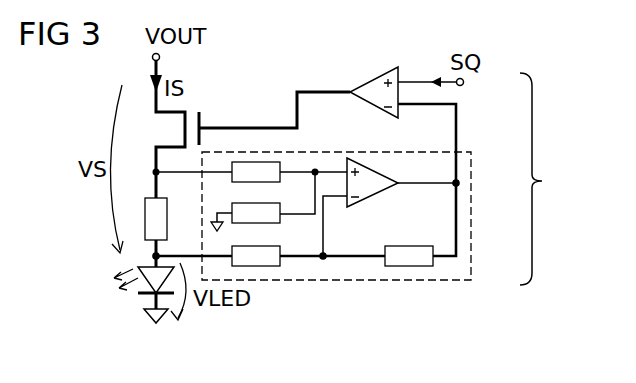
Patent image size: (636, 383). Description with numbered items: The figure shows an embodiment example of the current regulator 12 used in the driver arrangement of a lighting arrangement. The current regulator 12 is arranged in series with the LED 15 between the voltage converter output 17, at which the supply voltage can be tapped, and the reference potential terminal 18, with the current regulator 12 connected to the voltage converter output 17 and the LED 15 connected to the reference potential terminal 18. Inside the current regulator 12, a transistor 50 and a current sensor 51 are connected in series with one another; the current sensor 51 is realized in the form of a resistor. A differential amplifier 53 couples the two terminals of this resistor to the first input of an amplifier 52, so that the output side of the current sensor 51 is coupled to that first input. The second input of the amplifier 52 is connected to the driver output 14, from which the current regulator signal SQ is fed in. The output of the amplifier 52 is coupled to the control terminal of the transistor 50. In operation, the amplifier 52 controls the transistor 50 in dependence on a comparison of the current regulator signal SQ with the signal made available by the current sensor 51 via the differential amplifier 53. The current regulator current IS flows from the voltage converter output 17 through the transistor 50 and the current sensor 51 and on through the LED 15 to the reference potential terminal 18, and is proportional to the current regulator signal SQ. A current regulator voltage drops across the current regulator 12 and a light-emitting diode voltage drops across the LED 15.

The current regulator 12 is at (548, 179).
The driver output 14 is at (464, 84).
The LED 15 is at (134, 292).
The voltage converter output 17 is at (152, 58).
The reference potential terminal 18 is at (144, 318).
The transistor 50 is at (200, 120).
The current sensor 51 is at (168, 236).
The amplifier 52 is at (380, 78).
The differential amplifier 53 is at (471, 193).